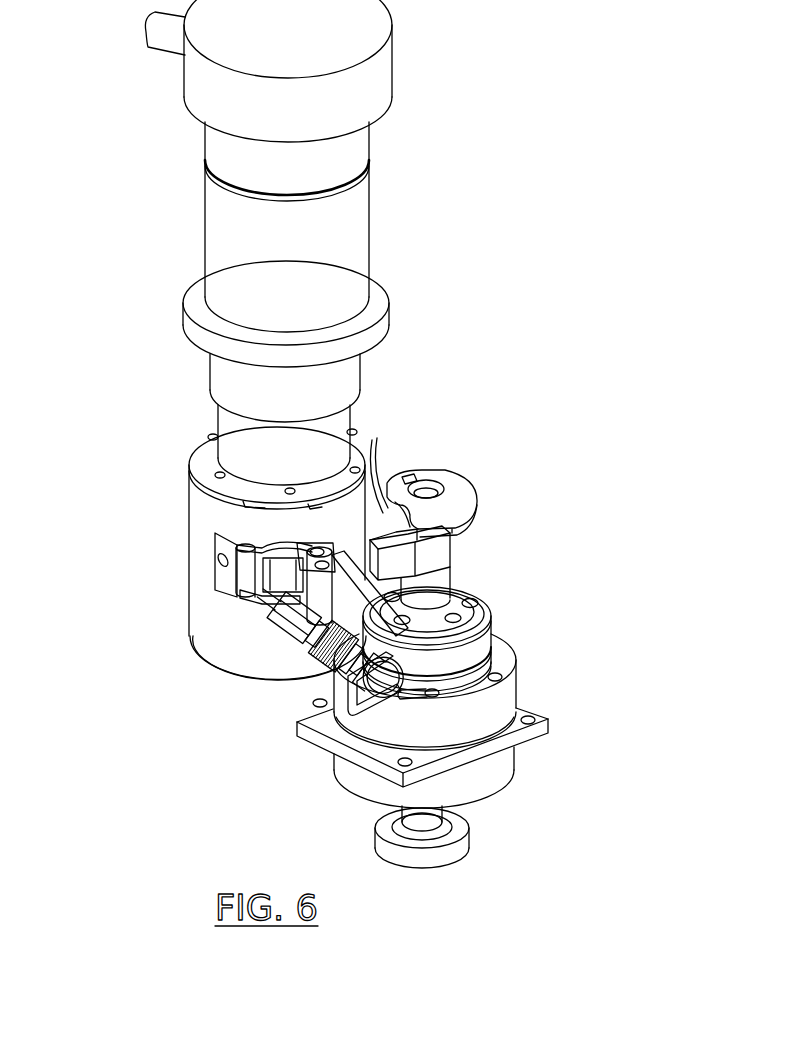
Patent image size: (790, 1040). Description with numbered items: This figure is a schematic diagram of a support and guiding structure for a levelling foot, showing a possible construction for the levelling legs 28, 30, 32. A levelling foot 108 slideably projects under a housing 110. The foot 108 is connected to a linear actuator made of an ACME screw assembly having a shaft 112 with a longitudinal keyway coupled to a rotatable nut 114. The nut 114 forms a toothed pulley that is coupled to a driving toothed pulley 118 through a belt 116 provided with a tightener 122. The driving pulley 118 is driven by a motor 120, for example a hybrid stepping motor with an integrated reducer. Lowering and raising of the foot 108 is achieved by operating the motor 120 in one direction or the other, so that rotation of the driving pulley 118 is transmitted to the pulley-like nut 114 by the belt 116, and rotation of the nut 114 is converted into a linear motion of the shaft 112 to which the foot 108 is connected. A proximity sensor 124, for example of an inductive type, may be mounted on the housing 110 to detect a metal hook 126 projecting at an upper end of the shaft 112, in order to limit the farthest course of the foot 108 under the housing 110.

The levelling leg 28 is at (375, 434).
The levelling leg 30 is at (375, 434).
The levelling leg 32 is at (375, 434).
The levelling foot 108 is at (463, 843).
The housing 110 is at (307, 727).
The shaft 112 is at (444, 547).
The rotatable nut 114 is at (488, 594).
The belt 116 is at (378, 513).
The driving toothed pulley 118 is at (373, 447).
The motor 120 is at (362, 216).
The tightener 122 is at (252, 572).
The proximity sensor 124 is at (244, 675).
The metal hook 126 is at (412, 567).